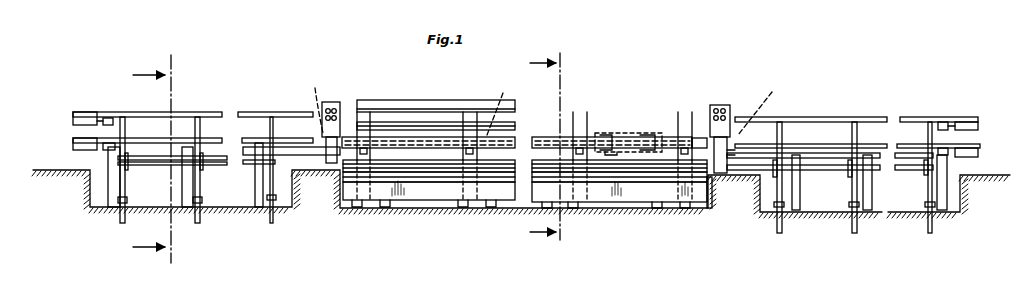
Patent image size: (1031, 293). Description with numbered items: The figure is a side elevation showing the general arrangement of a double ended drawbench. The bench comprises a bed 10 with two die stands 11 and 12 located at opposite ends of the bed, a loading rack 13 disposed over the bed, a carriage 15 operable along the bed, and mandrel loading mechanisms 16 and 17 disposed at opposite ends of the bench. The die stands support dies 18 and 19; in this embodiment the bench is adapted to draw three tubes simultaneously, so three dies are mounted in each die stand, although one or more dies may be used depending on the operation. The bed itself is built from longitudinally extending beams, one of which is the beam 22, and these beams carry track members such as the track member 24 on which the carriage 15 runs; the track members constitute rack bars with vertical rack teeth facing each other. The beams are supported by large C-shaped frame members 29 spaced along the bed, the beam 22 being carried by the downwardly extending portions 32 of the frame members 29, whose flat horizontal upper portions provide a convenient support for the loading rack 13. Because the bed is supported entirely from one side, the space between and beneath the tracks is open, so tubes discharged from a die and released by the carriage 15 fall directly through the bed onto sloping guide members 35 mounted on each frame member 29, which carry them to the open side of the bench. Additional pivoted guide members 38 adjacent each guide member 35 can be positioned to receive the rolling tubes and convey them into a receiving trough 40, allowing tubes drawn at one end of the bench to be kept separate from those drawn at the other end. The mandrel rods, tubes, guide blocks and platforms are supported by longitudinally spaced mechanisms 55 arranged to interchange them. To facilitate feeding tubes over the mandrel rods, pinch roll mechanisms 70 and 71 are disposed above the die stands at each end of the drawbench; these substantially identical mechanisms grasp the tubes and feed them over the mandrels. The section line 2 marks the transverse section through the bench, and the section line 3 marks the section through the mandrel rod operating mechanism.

The section line 2— 2 is at (545, 150).
The section line 3— 3 is at (152, 162).
The bed 10 is at (701, 130).
The die stand 11 is at (330, 168).
The die stand 12 is at (722, 166).
The loading rack 13 is at (476, 100).
The carriage 15 is at (633, 156).
The mandrel loading mechanism 16 is at (255, 109).
The mandrel loading mechanism 17 is at (872, 114).
The die 18 is at (315, 102).
The die 19 is at (765, 107).
The longitudinally extending beam 22 is at (403, 140).
The track member 24 is at (504, 105).
The frame member 29 is at (370, 152).
The downwardly extending portion 32 is at (365, 120).
The sloping guide member 35 is at (432, 166).
The additional guide member 38 is at (492, 213).
The receiving trough 40 is at (400, 197).
The supporting mechanism 55 is at (127, 181).
The pinch roll mechanism 70 is at (336, 104).
The pinch roll mechanism 71 is at (726, 105).